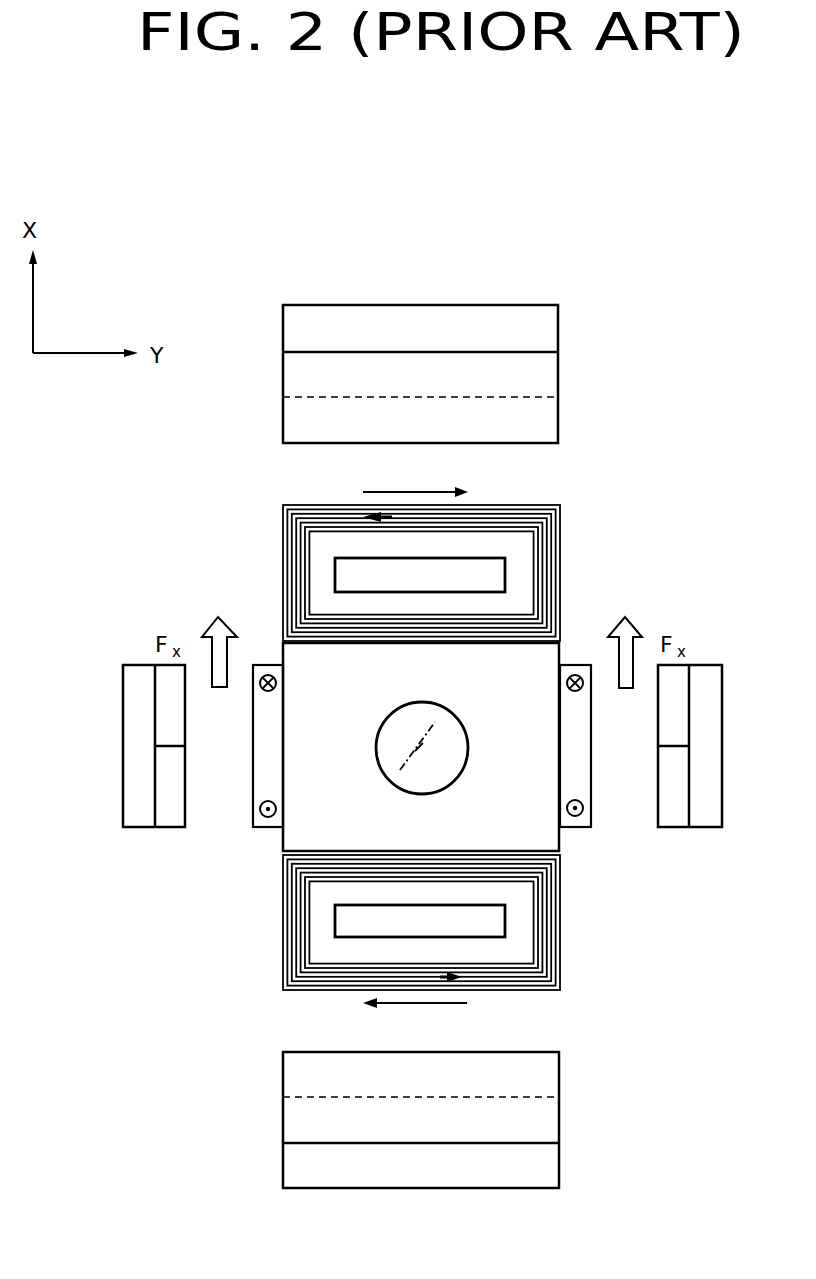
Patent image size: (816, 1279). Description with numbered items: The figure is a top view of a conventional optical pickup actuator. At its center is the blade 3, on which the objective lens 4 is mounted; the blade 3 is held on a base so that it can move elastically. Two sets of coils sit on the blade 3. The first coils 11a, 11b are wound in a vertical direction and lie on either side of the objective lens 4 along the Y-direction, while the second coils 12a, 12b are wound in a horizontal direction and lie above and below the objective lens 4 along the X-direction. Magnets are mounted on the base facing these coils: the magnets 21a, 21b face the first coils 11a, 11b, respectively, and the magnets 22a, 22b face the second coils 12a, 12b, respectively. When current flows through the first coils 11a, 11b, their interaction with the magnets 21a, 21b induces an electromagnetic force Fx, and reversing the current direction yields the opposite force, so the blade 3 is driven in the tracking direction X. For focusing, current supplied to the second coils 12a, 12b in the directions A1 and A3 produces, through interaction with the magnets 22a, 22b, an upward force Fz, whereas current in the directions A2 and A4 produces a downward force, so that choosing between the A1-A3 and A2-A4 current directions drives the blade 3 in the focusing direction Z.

The blade 3 is at (305, 657).
The objective lens 4 is at (435, 722).
The first coil 11a is at (574, 828).
The first coil 11b is at (268, 828).
The second coil 12a is at (560, 567).
The second coil 12b is at (560, 953).
The magnet 21a is at (675, 828).
The magnet 21b is at (168, 828).
The magnet 22a is at (559, 378).
The magnet 22b is at (559, 1122).
The current direction A1 is at (457, 519).
The current direction A2 is at (415, 492).
The current direction A3 is at (460, 980).
The current direction A4 is at (415, 1003).